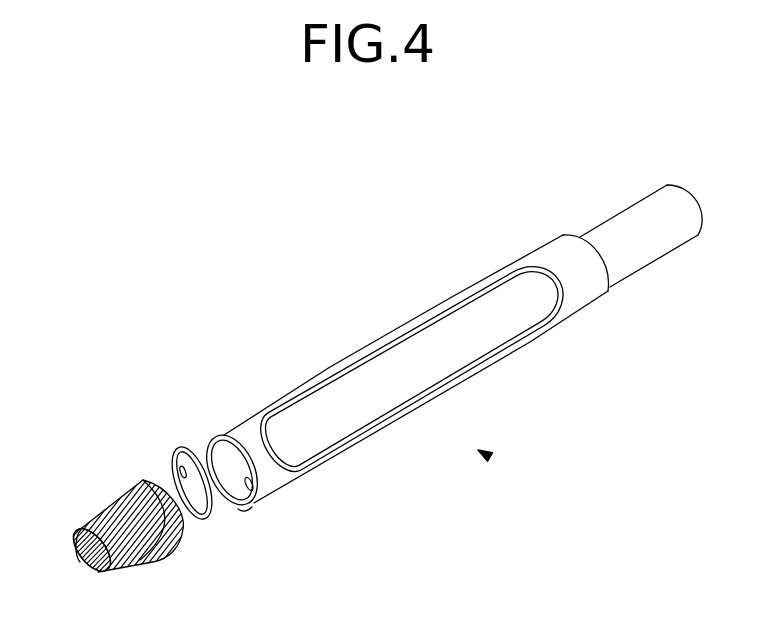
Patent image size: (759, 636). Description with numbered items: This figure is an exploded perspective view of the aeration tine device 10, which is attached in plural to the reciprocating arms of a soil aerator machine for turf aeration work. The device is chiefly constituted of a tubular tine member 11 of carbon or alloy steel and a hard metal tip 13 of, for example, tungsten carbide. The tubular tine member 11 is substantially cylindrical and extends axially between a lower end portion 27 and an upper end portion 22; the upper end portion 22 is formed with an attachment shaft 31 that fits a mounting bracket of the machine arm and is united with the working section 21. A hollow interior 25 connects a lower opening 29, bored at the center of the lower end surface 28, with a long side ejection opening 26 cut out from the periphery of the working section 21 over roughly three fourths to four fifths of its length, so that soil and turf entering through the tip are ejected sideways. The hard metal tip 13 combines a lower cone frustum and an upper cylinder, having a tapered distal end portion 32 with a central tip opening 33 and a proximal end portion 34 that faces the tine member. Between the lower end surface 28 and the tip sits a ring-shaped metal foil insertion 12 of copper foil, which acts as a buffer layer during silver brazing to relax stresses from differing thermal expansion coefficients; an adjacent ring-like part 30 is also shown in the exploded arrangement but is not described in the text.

The aeration tine device 10 is at (490, 457).
The tubular tine member 11 is at (478, 350).
The metal foil insertion 12 is at (203, 518).
The hard metal tip 13 is at (133, 562).
The working section 21 is at (573, 308).
The upper end portion 22 is at (633, 258).
The hollow interior 25 is at (315, 403).
The long side ejection opening 26 is at (340, 443).
The lower end portion 27 is at (240, 427).
The lower end surface 28 is at (240, 507).
The lower opening 29 is at (254, 497).
The ring member 30 is at (182, 457).
The attachment shaft 31 is at (682, 208).
The tapered distal end portion 32 is at (77, 558).
The tip opening 33 is at (87, 568).
The proximal end portion 34 is at (143, 478).